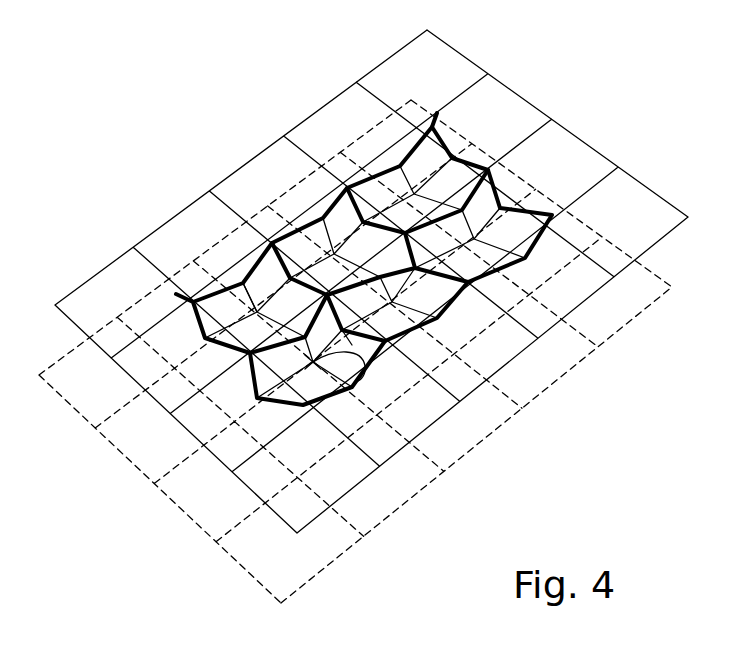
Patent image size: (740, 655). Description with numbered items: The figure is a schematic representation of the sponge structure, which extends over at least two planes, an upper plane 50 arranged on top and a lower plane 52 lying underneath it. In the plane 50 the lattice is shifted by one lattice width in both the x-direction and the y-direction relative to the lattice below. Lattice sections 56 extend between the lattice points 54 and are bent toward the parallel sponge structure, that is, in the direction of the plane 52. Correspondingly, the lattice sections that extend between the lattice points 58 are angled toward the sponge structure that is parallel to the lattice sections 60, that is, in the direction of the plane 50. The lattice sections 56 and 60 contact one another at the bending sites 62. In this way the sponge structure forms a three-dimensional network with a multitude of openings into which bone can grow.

The plane 50 is at (338, 97).
The plane 52 is at (366, 125).
The lattice points 54 is at (272, 243).
The lattice sections 56 is at (205, 272).
The lattice points 58 is at (249, 356).
The lattice sections 60 is at (313, 362).
The bending sites 62 is at (258, 310).